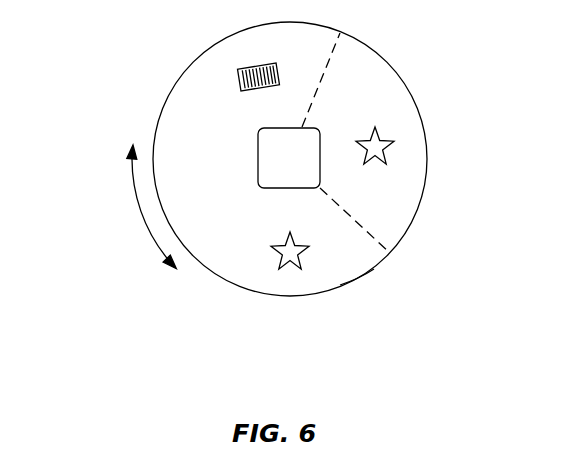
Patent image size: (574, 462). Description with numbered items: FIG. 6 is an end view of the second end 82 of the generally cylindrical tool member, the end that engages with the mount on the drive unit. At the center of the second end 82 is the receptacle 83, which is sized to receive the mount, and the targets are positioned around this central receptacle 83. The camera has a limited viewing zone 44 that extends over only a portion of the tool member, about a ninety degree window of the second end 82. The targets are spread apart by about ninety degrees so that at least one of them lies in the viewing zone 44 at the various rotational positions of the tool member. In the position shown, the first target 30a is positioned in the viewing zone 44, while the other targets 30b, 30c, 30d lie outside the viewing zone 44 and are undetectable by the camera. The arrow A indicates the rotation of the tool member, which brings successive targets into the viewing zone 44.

The viewing zone 44 is at (375, 82).
The second end 82 is at (373, 269).
The receptacle 83 is at (273, 173).
The first target 30a is at (390, 138).
The target 30b is at (300, 268).
The target 30c is at (197, 153).
The target 30d is at (243, 66).
The rotation direction arrow A is at (141, 213).